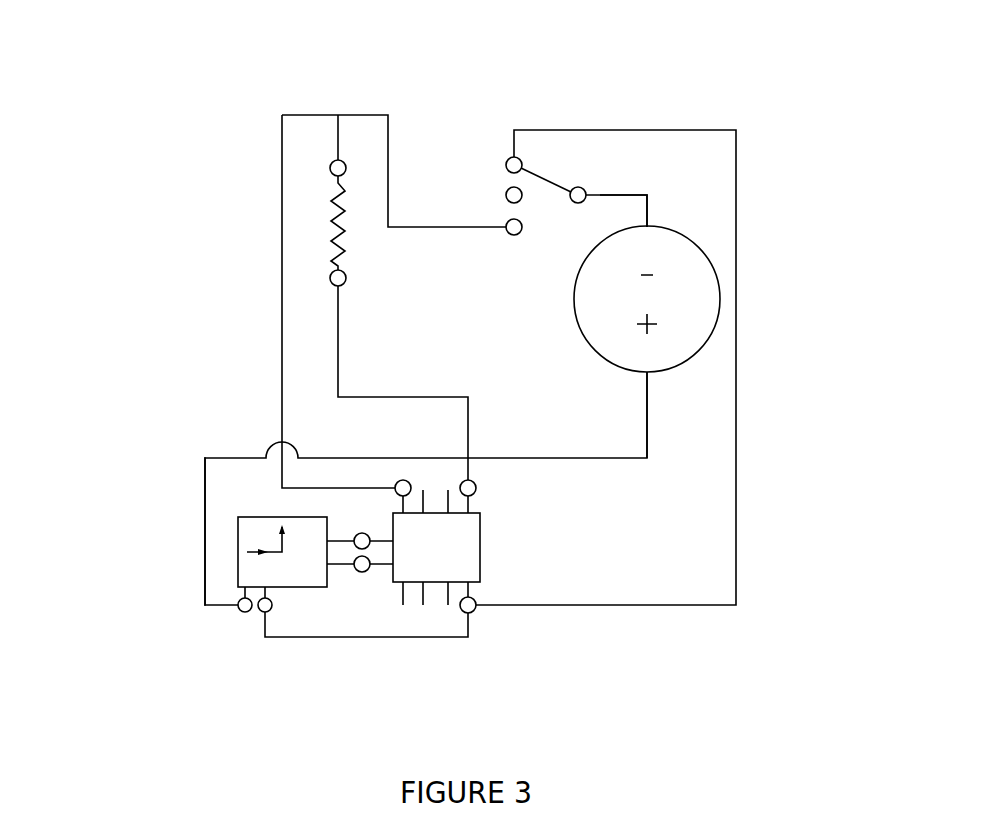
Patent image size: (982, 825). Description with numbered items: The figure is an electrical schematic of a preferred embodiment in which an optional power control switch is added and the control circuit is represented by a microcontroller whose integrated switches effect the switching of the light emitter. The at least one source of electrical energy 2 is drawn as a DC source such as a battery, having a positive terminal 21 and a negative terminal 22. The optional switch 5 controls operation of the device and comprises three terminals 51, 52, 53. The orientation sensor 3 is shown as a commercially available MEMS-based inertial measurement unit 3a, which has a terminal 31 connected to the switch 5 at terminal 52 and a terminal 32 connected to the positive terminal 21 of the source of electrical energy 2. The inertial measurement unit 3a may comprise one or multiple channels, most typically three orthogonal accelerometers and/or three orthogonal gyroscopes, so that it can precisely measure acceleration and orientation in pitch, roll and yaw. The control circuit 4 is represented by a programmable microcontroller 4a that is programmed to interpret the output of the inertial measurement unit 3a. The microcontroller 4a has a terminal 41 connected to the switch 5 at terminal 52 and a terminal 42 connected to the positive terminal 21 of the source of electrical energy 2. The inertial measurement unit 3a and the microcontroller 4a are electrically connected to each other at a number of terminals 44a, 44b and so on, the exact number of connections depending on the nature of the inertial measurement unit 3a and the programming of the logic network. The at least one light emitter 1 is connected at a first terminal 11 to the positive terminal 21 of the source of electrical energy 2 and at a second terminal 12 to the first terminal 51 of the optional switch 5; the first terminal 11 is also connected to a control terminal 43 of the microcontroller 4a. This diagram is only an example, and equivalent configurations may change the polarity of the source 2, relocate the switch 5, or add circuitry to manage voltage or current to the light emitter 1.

The light emitter 1 is at (330, 218).
The first terminal 11 is at (320, 277).
The second terminal 12 is at (322, 163).
The source of electrical energy 2 is at (655, 310).
The positive terminal 21 is at (655, 387).
The negative terminal 22 is at (657, 207).
The orientation sensor 3 is at (217, 587).
The inertial measurement unit 3a is at (302, 598).
The terminal 31 is at (260, 613).
The terminal 32 is at (238, 612).
The control circuit 4 is at (380, 498).
The microcontroller 4a is at (433, 602).
The terminal 41 is at (477, 615).
The terminal 42 is at (482, 488).
The control terminal 43 is at (403, 480).
The terminal 44a is at (362, 523).
The terminal 44b is at (207, 460).
The switch 5 is at (570, 172).
The first terminal 51 is at (497, 213).
The terminal 52 is at (498, 158).
The terminal 53 is at (498, 185).